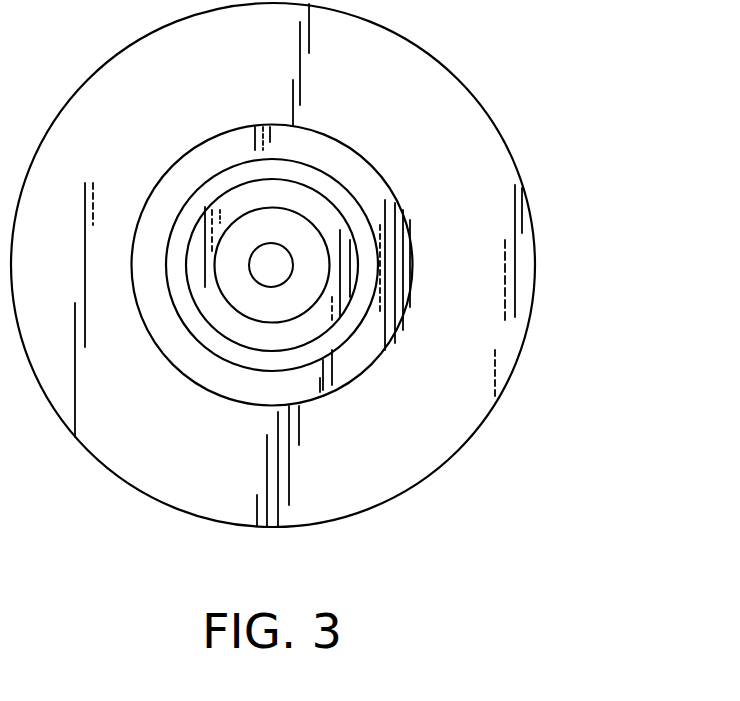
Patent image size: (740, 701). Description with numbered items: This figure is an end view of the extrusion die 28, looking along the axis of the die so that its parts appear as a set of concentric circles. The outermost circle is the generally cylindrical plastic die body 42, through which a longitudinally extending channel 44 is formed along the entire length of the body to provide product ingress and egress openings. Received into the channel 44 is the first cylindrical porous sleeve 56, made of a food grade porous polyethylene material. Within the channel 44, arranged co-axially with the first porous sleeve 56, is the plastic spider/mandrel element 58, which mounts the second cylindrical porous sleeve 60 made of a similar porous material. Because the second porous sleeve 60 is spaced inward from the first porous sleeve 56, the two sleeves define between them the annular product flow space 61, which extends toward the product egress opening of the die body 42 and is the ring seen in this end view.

The extrusion die 28 is at (323, 265).
The die body 42 is at (458, 452).
The channel 44 is at (362, 165).
The first cylindrical porous sleeve 56 is at (167, 200).
The spider/mandrel element 58 is at (240, 297).
The second cylindrical porous sleeve 60 is at (258, 191).
The annular product flow space 61 is at (343, 331).